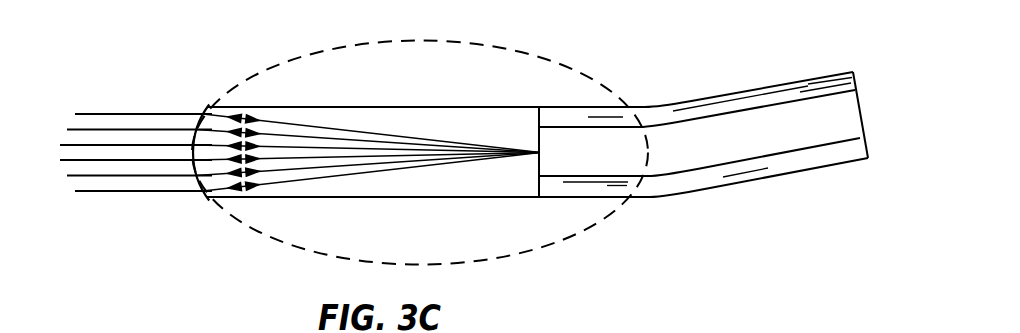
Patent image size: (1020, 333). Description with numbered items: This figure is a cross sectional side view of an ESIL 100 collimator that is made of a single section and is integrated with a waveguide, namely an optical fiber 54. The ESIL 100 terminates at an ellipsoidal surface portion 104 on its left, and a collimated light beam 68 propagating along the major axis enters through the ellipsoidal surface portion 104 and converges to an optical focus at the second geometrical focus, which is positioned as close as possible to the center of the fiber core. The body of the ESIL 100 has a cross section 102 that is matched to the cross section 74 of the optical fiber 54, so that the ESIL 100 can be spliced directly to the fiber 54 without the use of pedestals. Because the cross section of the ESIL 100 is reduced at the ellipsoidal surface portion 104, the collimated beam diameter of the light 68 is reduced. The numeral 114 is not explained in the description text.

The ESIL collimator 100 is at (205, 36).
The ellipsoidal surface portion 104 is at (198, 110).
The cross section 102 is at (434, 238).
The cross section of optical fiber 74 is at (598, 238).
The optical fiber 54 is at (700, 176).
The collimated light beam 68 is at (158, 238).
The light path 114 is at (700, 327).